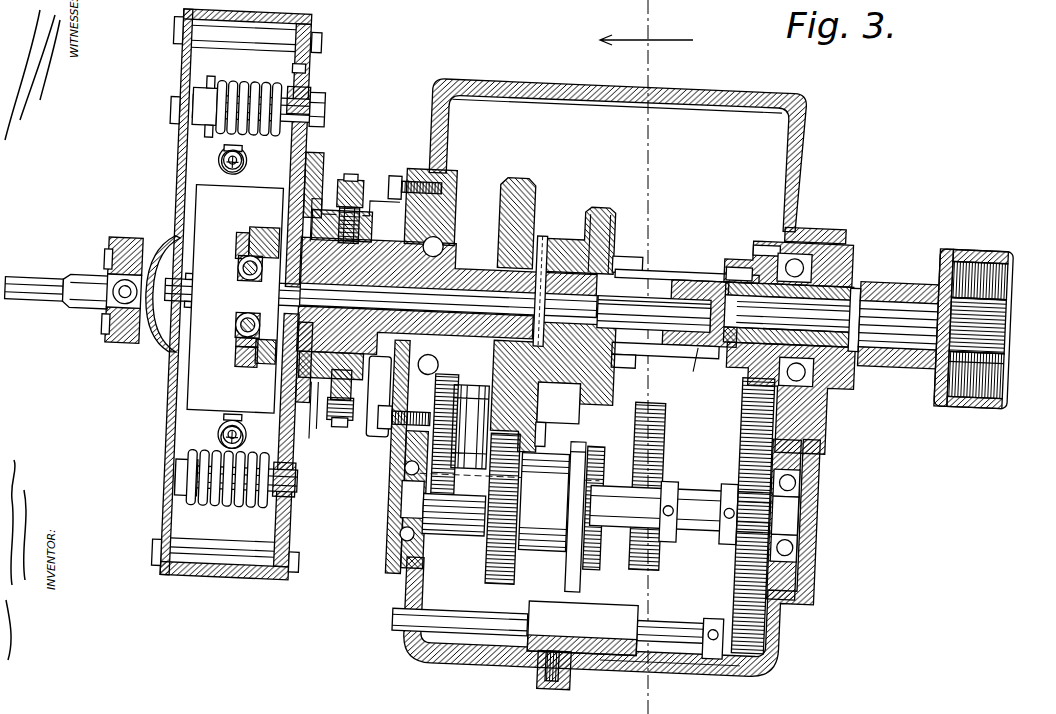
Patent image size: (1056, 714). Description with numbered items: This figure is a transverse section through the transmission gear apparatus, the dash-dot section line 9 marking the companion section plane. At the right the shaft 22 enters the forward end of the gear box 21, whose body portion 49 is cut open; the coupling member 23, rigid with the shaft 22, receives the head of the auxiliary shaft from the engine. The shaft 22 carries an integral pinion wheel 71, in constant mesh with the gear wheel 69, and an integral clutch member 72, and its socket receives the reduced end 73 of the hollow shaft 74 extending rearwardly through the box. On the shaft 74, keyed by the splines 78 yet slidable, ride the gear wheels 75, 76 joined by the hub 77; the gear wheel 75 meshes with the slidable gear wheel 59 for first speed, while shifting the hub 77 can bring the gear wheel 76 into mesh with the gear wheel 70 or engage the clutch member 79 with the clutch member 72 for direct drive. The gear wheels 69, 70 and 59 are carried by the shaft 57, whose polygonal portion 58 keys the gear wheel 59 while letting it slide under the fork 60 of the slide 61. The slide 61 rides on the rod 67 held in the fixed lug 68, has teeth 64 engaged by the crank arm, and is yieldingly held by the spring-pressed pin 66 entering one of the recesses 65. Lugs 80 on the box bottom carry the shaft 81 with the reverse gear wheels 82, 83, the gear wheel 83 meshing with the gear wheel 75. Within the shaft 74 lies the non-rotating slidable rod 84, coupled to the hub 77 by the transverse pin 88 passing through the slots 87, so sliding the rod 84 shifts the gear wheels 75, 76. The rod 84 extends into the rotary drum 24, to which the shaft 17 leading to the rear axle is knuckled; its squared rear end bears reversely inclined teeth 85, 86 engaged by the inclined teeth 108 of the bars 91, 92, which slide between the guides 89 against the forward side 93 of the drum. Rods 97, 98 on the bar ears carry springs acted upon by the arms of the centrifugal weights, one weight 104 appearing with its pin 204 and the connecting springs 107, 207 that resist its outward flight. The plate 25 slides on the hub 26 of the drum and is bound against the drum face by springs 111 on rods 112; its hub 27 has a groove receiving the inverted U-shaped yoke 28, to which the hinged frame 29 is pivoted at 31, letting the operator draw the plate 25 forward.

The section line 9 is at (661, 658).
The shaft for driving the rear axle 17 is at (42, 301).
The gear box 21 is at (622, 378).
The shaft 22 is at (872, 286).
The coupling member 23 is at (973, 342).
The rotary drum 24 is at (240, 313).
The plate 25 is at (352, 297).
The hub 26 is at (402, 395).
The hub 27 is at (393, 436).
The yoke 28 is at (407, 180).
The yoke or frame 29 is at (390, 182).
The pivot 31 is at (359, 501).
The body portion 49 is at (616, 118).
The shaft 57 is at (714, 524).
The polygonal portion 58 is at (465, 529).
The slidable gear wheel 59 is at (497, 581).
The fork 60 is at (575, 563).
The slide 61 is at (569, 601).
The teeth 64 is at (566, 617).
The recesses 65 is at (614, 654).
The spring-pressed pin 66 is at (564, 669).
The rod 67 is at (406, 620).
The fixed lug 68 is at (737, 663).
The gear wheel 69 is at (751, 412).
The gear wheel 70 is at (670, 442).
The pinion wheel 71 is at (758, 235).
The clutch member 72 is at (736, 260).
The reduced end 73 is at (791, 315).
The shaft 74 is at (700, 369).
The gear wheel 75 is at (514, 182).
The gear wheel 76 is at (609, 210).
The hub 77 is at (585, 239).
The keys or splines 78 is at (691, 267).
The clutch member 79 is at (630, 253).
The lugs 80 is at (492, 387).
The shaft 81 is at (552, 430).
The gear wheel 82 is at (399, 515).
The gear wheel 83 is at (546, 408).
The rod or shaft 84 is at (449, 300).
The inclined gear teeth 85 is at (170, 268).
The inclined gear teeth 86 is at (237, 338).
The slots 87 is at (653, 328).
The transverse pin 88 is at (545, 238).
The guides 89 is at (256, 240).
The slidable bar 91 is at (238, 246).
The slidable bar 92 is at (238, 374).
The forward side 93 is at (296, 79).
The rod 97 is at (237, 278).
The rod 98 is at (238, 356).
The weight 104 is at (192, 400).
The connecting coiled springs 107 is at (215, 168).
The inclined gear teeth 108 is at (306, 307).
The springs 111 is at (256, 101).
The rods 112 is at (306, 116).
The pin 204 is at (256, 445).
The connecting coiled springs 207 is at (214, 180).